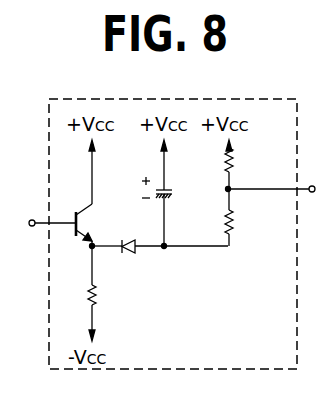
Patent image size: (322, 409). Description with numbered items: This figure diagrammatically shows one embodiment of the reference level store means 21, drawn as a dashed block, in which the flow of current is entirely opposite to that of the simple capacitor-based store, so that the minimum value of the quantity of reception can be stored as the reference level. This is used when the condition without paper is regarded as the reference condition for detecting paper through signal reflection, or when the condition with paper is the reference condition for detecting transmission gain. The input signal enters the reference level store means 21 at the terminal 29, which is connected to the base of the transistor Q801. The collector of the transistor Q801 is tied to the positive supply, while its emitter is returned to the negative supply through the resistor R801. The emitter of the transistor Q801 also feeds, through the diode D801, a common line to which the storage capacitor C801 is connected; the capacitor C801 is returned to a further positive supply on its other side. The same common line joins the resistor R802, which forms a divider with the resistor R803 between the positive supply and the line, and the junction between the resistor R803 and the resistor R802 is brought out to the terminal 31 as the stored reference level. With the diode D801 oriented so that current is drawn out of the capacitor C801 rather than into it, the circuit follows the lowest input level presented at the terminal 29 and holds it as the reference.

The reference level store means 21 is at (173, 220).
The terminal 29 is at (45, 208).
The output terminal 31 is at (275, 175).
The transistor Q801 is at (109, 193).
The emitter resistor R801 is at (118, 293).
The resistor R802 is at (253, 217).
The resistor R803 is at (253, 164).
The capacitor C801 is at (182, 193).
The diode D801 is at (160, 263).